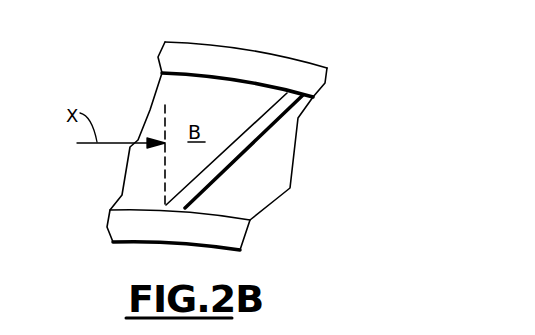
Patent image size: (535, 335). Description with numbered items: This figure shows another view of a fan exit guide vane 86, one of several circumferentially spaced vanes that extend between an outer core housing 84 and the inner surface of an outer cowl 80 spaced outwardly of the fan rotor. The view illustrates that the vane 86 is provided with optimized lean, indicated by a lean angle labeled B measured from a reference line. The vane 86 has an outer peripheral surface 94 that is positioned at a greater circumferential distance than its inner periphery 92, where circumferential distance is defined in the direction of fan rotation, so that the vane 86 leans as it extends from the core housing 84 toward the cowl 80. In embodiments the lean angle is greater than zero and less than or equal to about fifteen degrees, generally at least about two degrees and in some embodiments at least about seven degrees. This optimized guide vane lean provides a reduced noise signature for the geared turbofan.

The outer cowl 80 is at (187, 53).
The outer core housing 84 is at (232, 232).
The exit guide vane 86 is at (200, 178).
The inner periphery 92 is at (173, 213).
The outer peripheral surface 94 is at (295, 90).